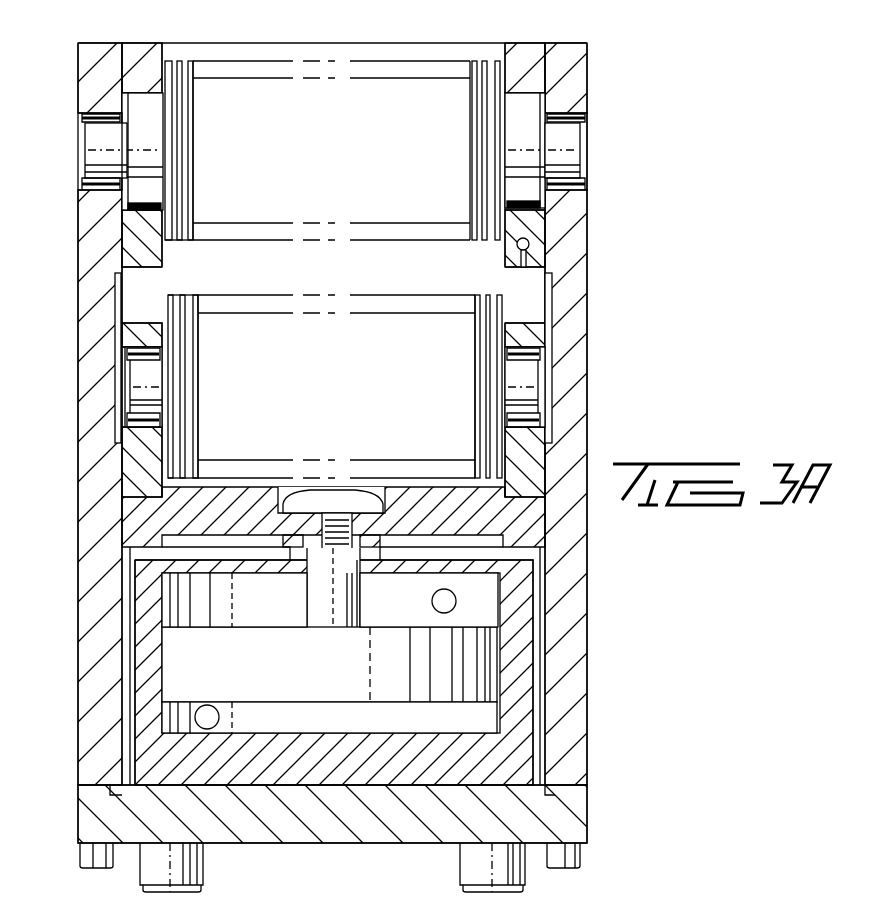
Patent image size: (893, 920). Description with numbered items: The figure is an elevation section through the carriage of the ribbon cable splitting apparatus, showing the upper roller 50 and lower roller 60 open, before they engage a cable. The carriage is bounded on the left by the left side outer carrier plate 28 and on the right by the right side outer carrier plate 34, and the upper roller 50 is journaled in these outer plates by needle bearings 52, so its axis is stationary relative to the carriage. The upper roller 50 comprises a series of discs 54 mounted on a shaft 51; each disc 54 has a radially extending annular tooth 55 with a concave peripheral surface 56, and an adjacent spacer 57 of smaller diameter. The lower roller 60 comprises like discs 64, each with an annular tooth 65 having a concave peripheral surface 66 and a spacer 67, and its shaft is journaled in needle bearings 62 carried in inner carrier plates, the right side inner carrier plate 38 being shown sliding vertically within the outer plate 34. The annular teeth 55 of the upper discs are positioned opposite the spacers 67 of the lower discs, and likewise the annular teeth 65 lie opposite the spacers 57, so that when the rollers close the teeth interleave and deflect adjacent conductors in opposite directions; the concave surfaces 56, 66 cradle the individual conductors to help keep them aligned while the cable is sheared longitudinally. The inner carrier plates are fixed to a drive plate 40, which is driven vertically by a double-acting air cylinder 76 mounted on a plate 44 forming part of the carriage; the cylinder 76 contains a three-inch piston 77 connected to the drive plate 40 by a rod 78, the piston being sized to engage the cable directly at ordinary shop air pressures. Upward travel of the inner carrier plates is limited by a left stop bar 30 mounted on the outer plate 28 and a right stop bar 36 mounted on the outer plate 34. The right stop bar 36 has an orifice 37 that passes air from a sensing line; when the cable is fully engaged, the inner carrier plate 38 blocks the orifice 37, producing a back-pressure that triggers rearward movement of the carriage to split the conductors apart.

The left side outer carrier plate 28 is at (100, 568).
The left stop bar 30 is at (135, 243).
The right side outer carrier plate 34 is at (572, 418).
The right stop bar 36 is at (535, 255).
The orifice 37 is at (530, 243).
The right side inner carrier plate 38 is at (528, 326).
The drive plate 40 is at (520, 527).
The plate 44 is at (572, 822).
The upper roller 50 is at (213, 56).
The shaft 51 is at (522, 110).
The needle bearings 52 is at (83, 188).
The discs 54 is at (170, 185).
The annular tooth 55 is at (195, 222).
The concave peripheral surface 56 is at (190, 242).
The spacer 57 is at (183, 190).
The lower roller 60 is at (282, 289).
The needle bearings 62 is at (125, 358).
The discs 64 is at (170, 423).
The annular teeth 65 is at (200, 434).
The concave peripheral surface 66 is at (200, 291).
The spacers 67 is at (488, 312).
The air cylinder 76 is at (520, 640).
The piston 77 is at (388, 652).
The rod 78 is at (306, 578).